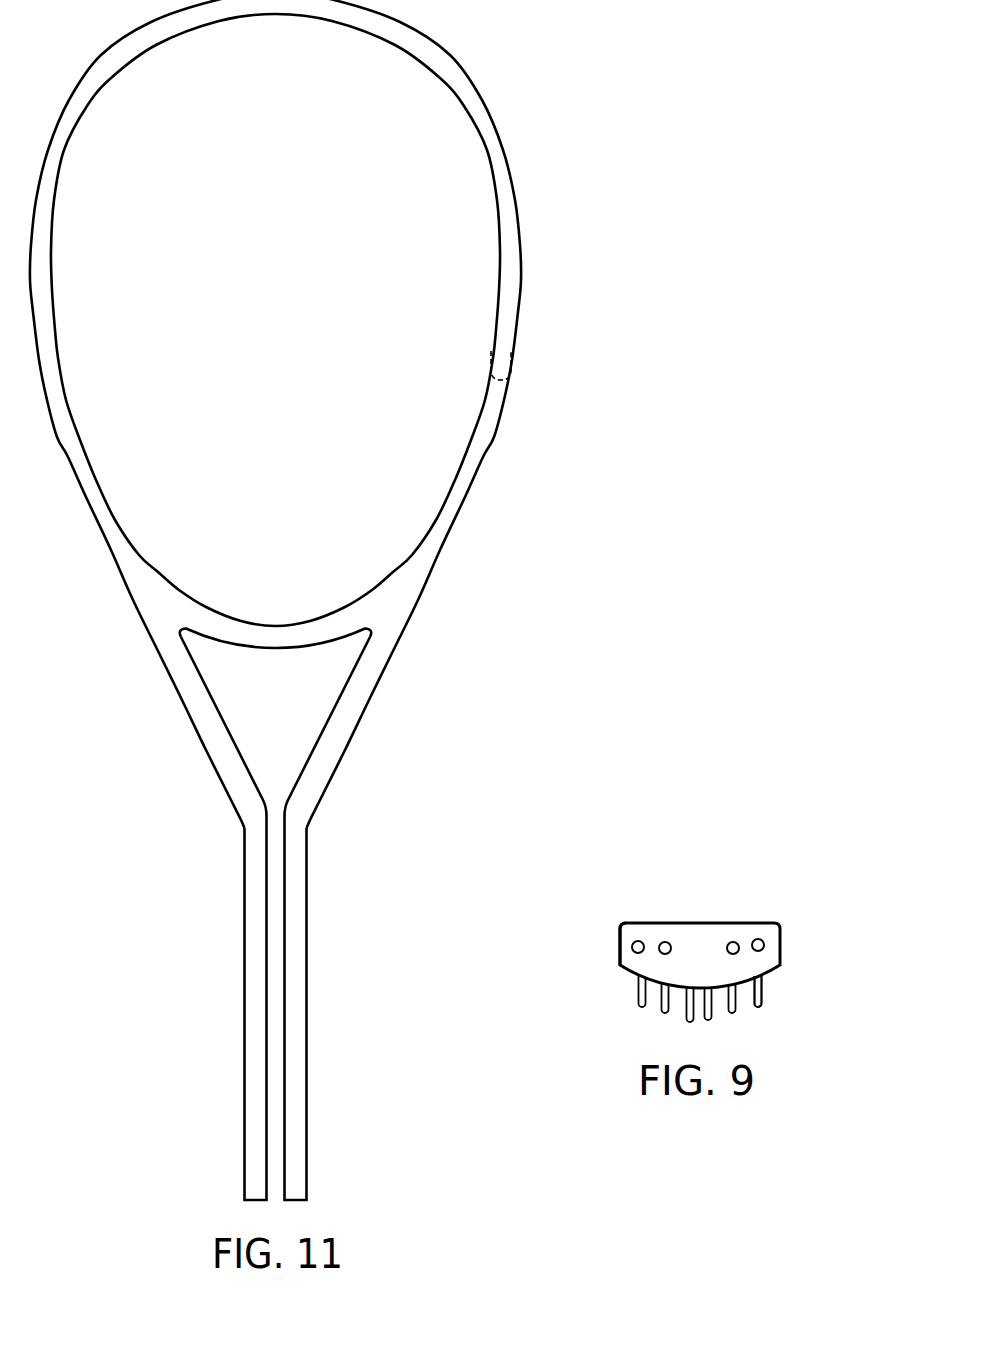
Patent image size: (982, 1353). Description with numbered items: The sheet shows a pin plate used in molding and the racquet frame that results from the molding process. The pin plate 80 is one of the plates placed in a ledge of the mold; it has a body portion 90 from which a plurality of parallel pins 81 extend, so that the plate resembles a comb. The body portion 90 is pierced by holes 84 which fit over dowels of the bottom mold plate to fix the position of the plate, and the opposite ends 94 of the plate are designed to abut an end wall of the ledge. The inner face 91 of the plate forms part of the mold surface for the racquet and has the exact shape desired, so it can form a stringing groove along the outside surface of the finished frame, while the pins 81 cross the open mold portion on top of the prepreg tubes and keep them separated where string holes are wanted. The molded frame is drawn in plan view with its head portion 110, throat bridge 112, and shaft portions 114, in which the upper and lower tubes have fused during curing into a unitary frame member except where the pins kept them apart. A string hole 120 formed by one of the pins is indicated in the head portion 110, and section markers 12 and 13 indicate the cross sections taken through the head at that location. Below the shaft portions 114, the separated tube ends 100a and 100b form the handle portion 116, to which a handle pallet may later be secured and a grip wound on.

In FIG. 11, the head portion 110 is at (482, 457).
In FIG. 11, the throat bridge 112 is at (283, 631).
In FIG. 11, the shaft portions 114 is at (340, 742).
In FIG. 11, the handle portion 116 is at (280, 1008).
In FIG. 11, the tube end 100a is at (246, 888).
In FIG. 11, the tube end 100b is at (305, 893).
In FIG. 11, the string hole 120 is at (513, 383).
In FIG. 11, the section line 12- 12 is at (544, 274).
In FIG. 11, the section line 13- 13 is at (544, 326).
In FIG. 9, the pin plate 80 is at (708, 930).
In FIG. 9, the pins 81 is at (637, 993).
In FIG. 9, the holes 84 is at (762, 942).
In FIG. 9, the body portion 90 is at (620, 930).
In FIG. 9, the inner face 91 is at (770, 973).
In FIG. 9, the opposite ends 94 is at (620, 943).